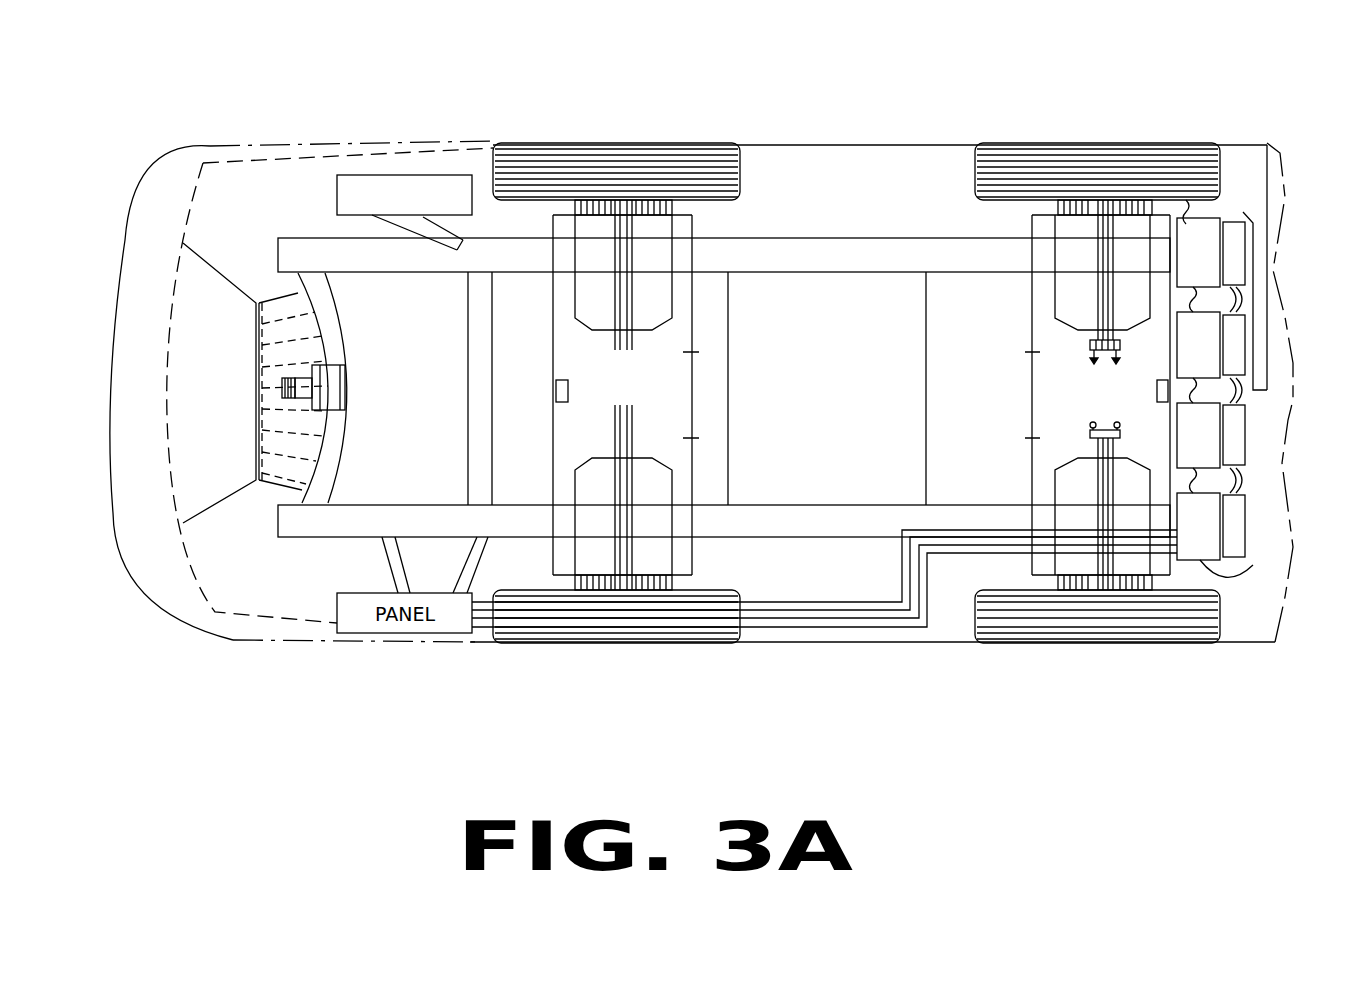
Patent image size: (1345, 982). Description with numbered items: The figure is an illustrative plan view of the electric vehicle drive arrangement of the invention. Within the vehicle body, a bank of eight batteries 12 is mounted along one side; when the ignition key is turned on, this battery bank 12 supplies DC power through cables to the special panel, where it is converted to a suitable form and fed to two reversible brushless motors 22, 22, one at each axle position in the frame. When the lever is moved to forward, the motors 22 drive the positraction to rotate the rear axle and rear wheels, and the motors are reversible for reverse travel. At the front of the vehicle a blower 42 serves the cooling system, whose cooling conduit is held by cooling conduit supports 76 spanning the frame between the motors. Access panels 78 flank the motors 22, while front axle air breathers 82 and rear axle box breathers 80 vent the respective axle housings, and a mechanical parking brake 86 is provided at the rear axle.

The battery bank 12 is at (1273, 143).
The brushless motor 22 is at (578, 298).
The blower 42 is at (295, 310).
The cooling conduit supports 76 is at (926, 349).
The access panels 78 is at (1030, 393).
The rear axle box breathers 80 is at (1156, 392).
The front axle air breathers 82 is at (555, 392).
The mechanical parking brake 86 is at (1092, 437).